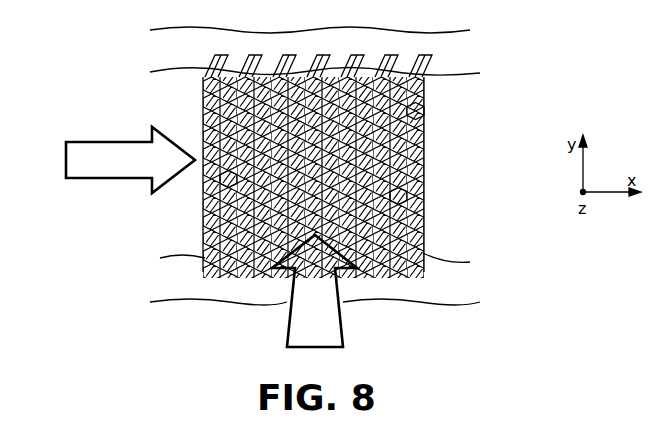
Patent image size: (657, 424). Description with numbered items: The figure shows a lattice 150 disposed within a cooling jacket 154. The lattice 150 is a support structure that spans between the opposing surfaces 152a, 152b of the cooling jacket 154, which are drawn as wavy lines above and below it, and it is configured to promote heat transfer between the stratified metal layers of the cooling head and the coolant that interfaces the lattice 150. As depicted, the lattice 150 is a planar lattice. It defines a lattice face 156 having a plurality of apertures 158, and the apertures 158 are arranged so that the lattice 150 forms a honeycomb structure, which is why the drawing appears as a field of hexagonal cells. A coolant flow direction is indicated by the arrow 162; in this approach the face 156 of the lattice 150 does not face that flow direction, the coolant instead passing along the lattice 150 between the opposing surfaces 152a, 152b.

The lattice 150 is at (180, 118).
The opposing surface 152a is at (470, 72).
The opposing surface 152b is at (462, 305).
The cooling jacket 154 is at (467, 167).
The lattice face 156 is at (423, 110).
The apertures 158 is at (230, 177).
The arrow 162 is at (113, 142).